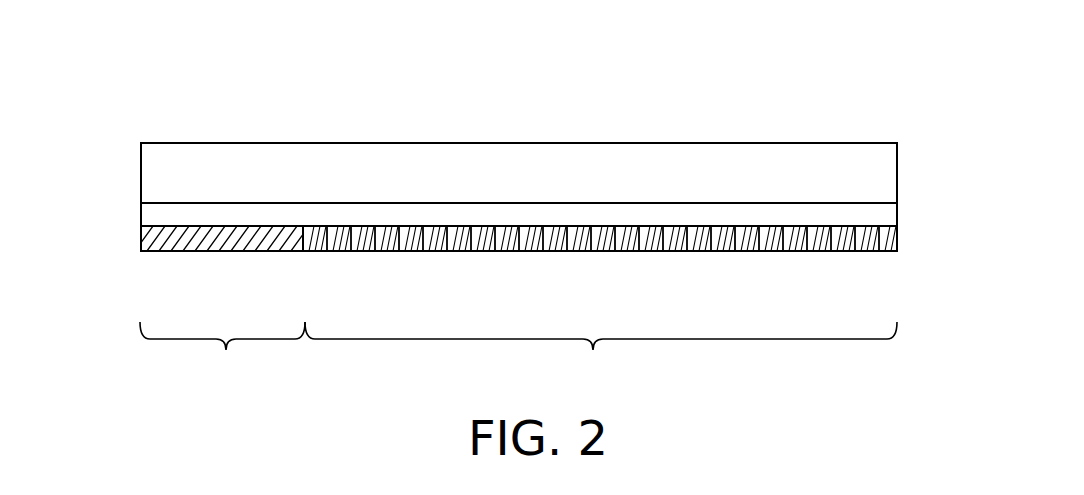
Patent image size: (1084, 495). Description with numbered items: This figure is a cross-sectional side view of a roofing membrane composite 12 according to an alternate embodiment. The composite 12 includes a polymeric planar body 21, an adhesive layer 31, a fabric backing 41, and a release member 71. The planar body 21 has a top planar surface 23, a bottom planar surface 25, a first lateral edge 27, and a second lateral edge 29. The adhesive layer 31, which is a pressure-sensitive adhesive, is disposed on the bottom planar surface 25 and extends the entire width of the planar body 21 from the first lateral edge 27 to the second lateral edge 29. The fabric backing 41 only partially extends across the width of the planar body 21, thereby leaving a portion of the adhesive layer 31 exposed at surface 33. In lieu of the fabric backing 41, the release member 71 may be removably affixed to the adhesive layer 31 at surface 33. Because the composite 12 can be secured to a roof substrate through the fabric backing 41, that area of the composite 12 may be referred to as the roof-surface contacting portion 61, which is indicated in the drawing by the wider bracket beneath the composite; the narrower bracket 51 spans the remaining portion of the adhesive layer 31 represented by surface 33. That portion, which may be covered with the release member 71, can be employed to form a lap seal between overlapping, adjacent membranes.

The composite 12 is at (397, 86).
The polymeric planar body 21 is at (168, 128).
The top planar surface 23 is at (450, 143).
The bottom planar surface 25 is at (624, 203).
The first lateral edge 27 is at (141, 172).
The second lateral edge 29 is at (897, 167).
The adhesive layer 31 is at (141, 216).
The surface 33 is at (243, 251).
The fabric backing 41 is at (897, 241).
The first portion 51 is at (222, 354).
The roof-surface contacting portion 61 is at (601, 355).
The release member 71 is at (141, 251).